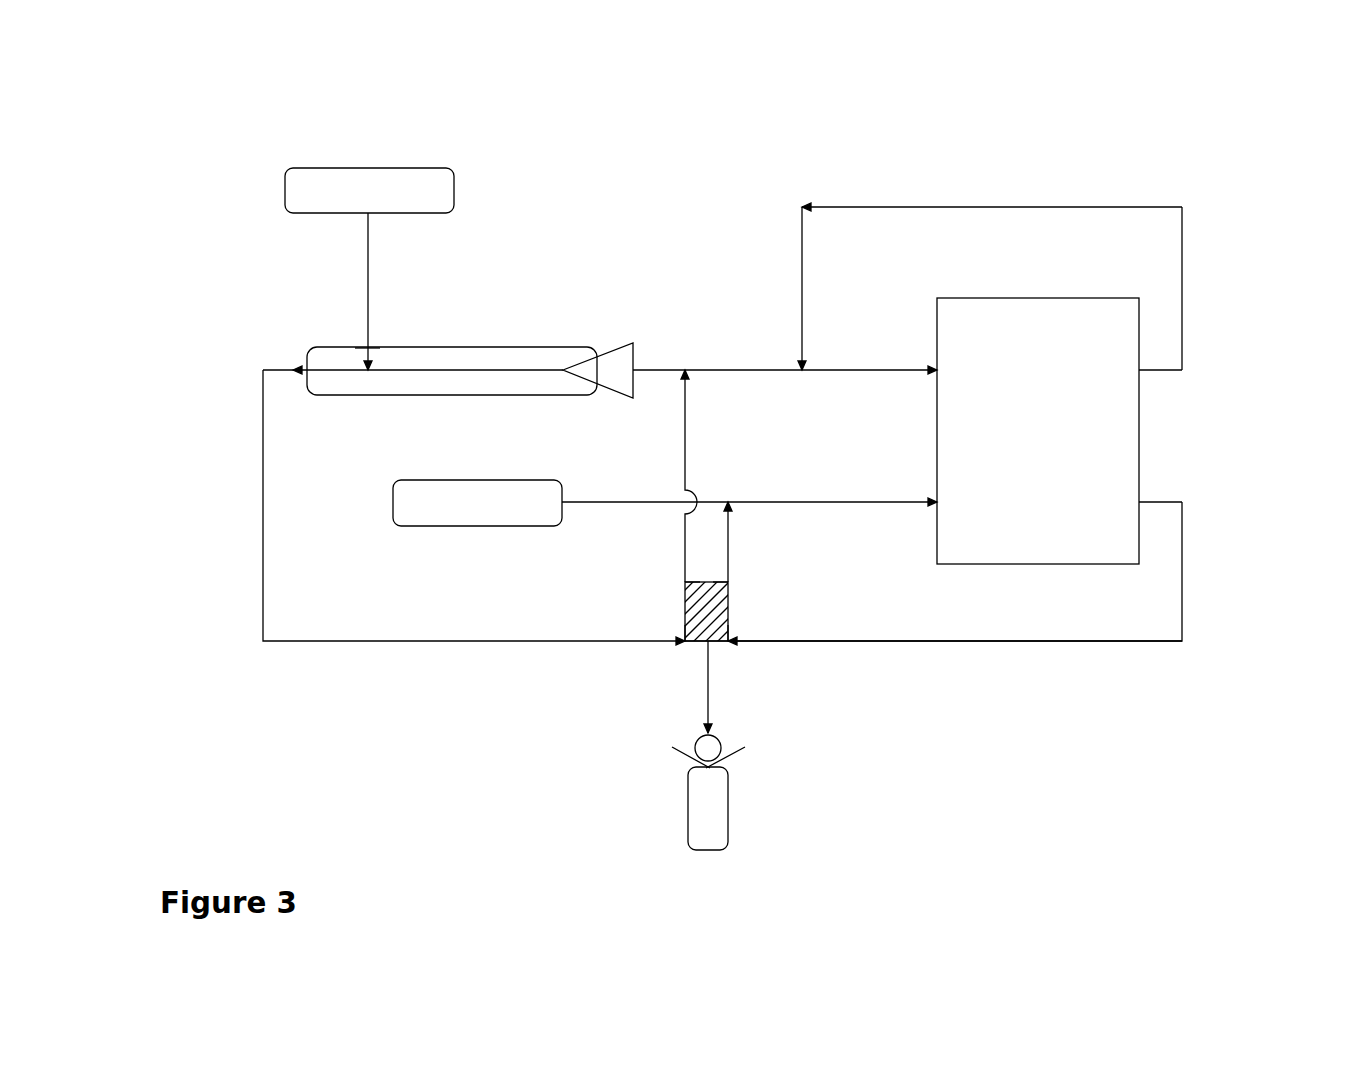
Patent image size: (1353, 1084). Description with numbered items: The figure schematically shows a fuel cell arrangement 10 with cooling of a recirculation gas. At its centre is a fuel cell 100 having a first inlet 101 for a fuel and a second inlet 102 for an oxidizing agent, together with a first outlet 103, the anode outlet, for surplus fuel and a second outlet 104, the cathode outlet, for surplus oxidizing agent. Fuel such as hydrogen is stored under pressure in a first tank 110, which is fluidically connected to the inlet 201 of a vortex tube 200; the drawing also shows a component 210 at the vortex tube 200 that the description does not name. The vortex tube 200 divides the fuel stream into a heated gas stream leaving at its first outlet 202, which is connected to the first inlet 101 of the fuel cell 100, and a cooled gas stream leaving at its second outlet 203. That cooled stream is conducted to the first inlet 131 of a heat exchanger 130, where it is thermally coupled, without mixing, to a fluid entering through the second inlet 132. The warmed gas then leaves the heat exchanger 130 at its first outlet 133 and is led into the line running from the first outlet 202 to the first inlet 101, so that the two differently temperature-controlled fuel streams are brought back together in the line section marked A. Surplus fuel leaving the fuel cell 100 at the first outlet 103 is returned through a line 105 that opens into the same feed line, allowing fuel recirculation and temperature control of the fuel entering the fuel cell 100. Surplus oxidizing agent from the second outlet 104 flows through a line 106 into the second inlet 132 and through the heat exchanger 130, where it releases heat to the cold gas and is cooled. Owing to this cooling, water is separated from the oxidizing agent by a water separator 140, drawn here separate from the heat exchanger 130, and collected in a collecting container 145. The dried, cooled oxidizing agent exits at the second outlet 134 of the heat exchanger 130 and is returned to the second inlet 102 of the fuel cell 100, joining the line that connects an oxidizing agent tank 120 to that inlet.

The fuel cell arrangement 10 is at (120, 167).
The fuel cell 100 is at (1072, 332).
The first inlet 101 is at (930, 360).
The second inlet 102 is at (930, 495).
The first outlet 103 is at (1143, 373).
The second outlet 104 is at (1145, 497).
The line 105 is at (1020, 205).
The line 106 is at (1088, 641).
The first tank 110 is at (373, 195).
The oxidizing agent tank 120 is at (462, 513).
The heat exchanger 130 is at (694, 650).
The first inlet 131 is at (680, 650).
The second inlet 132 is at (738, 650).
The first outlet 133 is at (682, 587).
The second outlet 134 is at (733, 580).
The water separator 140 is at (710, 758).
The collecting container 145 is at (713, 810).
The vortex tube 200 is at (497, 355).
The inlet 201 is at (363, 343).
The first outlet 202 is at (636, 343).
The second outlet 203 is at (300, 365).
The optical element 210 is at (613, 363).